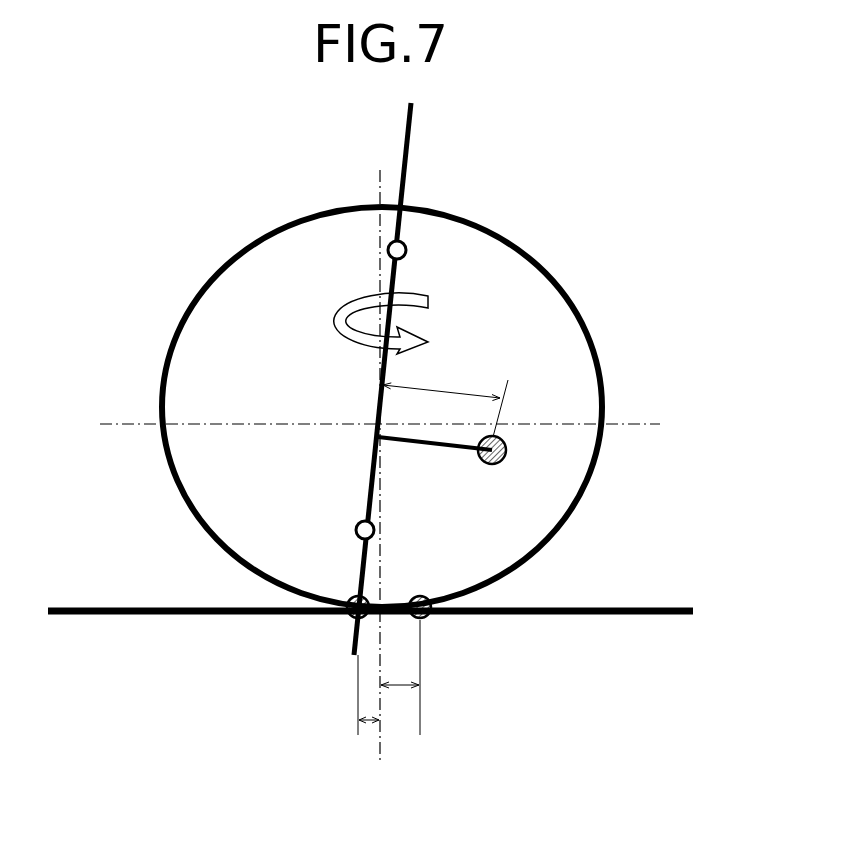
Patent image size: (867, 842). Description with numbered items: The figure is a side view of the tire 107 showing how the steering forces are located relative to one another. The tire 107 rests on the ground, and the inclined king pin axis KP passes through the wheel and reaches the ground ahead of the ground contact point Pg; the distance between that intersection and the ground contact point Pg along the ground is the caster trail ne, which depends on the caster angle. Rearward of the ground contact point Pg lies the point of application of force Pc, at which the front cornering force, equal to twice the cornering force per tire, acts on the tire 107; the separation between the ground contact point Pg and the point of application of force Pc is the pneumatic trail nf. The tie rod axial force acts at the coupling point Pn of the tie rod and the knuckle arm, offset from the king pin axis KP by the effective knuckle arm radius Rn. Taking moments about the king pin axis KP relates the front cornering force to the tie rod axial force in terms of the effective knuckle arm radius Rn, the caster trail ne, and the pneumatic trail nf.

The tire 107 is at (525, 250).
The king pin axis KP is at (405, 183).
The coupling point Pn is at (503, 440).
The ground contact point Pg is at (350, 614).
The point of application of force Pc is at (430, 616).
The effective knuckle arm radius Rn is at (445, 400).
The pneumatic trail nf is at (400, 677).
The caster trail ne is at (371, 707).